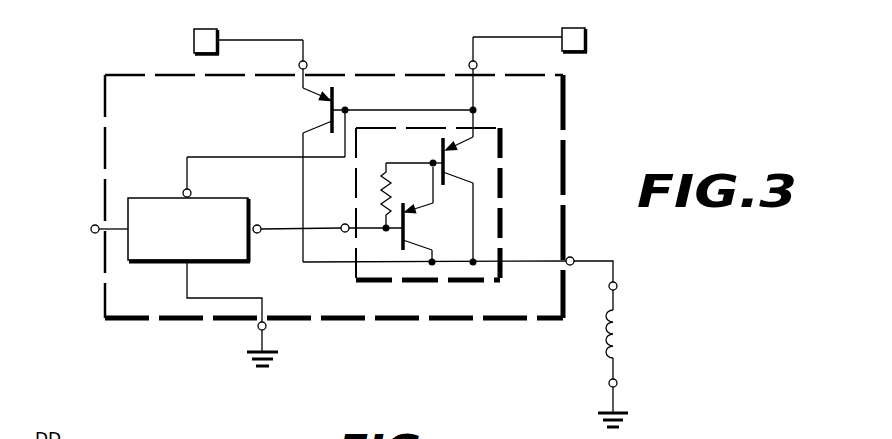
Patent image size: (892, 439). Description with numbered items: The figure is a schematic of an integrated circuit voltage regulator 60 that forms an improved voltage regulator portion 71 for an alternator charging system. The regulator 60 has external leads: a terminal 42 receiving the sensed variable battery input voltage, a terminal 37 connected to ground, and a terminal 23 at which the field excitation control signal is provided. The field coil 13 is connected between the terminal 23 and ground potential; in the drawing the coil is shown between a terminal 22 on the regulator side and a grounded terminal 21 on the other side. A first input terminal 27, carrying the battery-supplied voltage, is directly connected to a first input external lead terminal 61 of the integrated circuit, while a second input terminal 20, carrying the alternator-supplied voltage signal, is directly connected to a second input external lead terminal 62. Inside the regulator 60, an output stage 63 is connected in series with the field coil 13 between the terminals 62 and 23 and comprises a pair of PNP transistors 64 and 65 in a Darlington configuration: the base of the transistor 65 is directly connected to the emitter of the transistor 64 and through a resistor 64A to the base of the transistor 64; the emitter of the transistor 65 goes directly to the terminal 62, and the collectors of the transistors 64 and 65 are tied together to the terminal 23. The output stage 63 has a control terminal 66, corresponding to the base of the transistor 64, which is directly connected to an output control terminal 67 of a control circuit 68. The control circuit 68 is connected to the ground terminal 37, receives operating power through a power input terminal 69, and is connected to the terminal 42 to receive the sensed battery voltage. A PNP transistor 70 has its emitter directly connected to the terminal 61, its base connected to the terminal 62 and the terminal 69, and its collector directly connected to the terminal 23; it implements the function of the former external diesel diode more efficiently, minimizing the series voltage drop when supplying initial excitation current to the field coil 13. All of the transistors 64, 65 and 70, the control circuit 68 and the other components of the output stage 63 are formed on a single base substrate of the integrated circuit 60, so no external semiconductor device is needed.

The field coil 13 is at (621, 329).
The second input terminal 20 is at (589, 41).
The ground terminal 21 is at (619, 386).
The field winding terminal 22 is at (619, 287).
The terminal 23 is at (573, 257).
The first input terminal 27 is at (190, 39).
The terminal 37 is at (258, 330).
The terminal 42 is at (90, 227).
The integrated circuit voltage regulator 60 is at (567, 169).
The first input external lead terminal 61 is at (307, 61).
The second input external lead terminal 62 is at (471, 61).
The output stage 63 is at (504, 197).
The PNP transistor 64 is at (416, 229).
The resistor 64A is at (381, 190).
The PNP transistor 65 is at (458, 166).
The control terminal 66 is at (342, 224).
The output control terminal 67 is at (260, 233).
The control circuit 68 is at (158, 263).
The power input terminal 69 is at (190, 190).
The PNP transistor 70 is at (319, 110).
The improved voltage regulator portion 71 is at (720, 262).